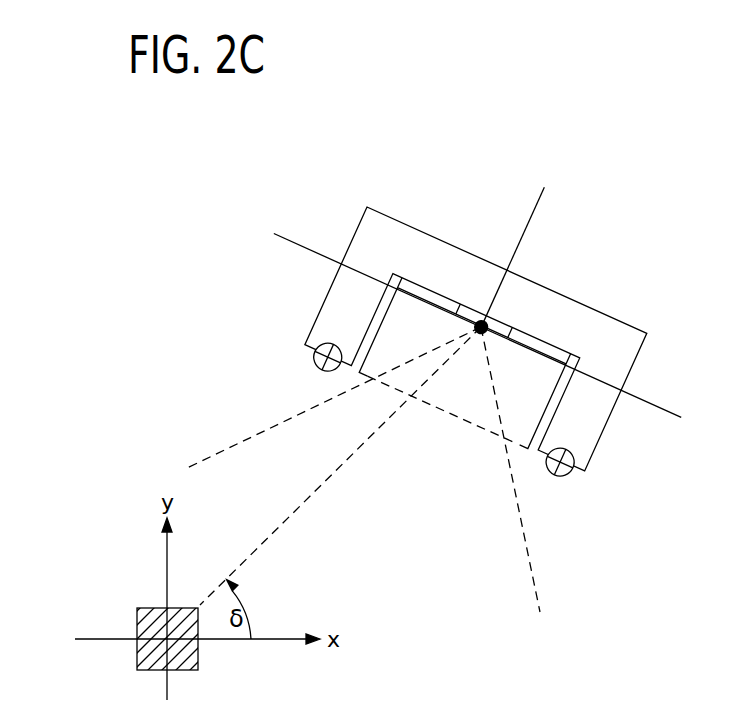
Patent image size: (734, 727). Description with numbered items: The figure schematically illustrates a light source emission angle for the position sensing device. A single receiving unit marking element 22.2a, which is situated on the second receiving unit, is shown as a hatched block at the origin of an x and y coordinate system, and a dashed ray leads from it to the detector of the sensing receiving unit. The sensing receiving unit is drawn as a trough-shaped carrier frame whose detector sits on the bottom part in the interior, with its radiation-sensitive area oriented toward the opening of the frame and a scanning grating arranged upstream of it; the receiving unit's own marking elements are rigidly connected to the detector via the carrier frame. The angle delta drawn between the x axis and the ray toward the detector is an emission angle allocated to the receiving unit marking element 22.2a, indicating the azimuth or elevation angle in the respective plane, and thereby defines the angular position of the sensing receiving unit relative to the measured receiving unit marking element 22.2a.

The receiving unit marking element 22.2a is at (198, 662).